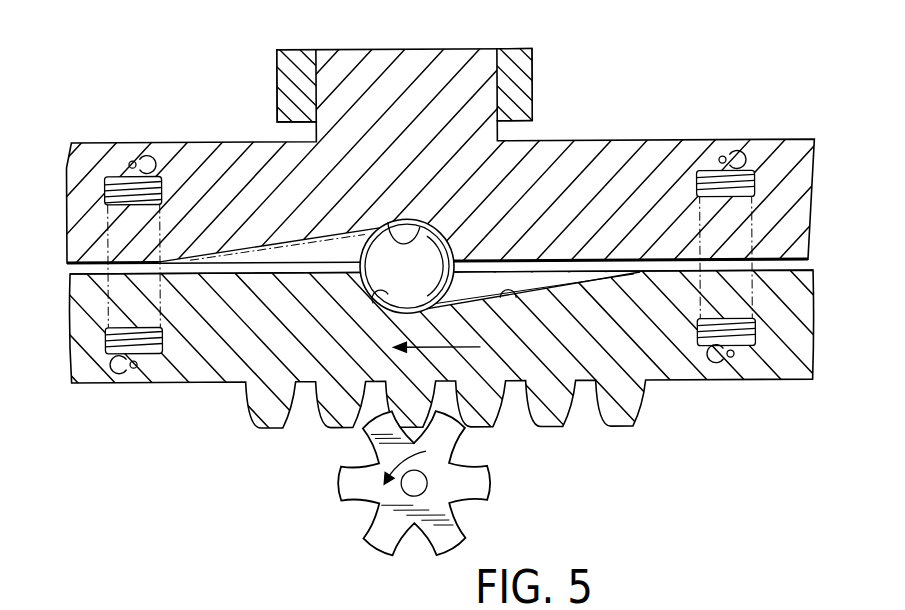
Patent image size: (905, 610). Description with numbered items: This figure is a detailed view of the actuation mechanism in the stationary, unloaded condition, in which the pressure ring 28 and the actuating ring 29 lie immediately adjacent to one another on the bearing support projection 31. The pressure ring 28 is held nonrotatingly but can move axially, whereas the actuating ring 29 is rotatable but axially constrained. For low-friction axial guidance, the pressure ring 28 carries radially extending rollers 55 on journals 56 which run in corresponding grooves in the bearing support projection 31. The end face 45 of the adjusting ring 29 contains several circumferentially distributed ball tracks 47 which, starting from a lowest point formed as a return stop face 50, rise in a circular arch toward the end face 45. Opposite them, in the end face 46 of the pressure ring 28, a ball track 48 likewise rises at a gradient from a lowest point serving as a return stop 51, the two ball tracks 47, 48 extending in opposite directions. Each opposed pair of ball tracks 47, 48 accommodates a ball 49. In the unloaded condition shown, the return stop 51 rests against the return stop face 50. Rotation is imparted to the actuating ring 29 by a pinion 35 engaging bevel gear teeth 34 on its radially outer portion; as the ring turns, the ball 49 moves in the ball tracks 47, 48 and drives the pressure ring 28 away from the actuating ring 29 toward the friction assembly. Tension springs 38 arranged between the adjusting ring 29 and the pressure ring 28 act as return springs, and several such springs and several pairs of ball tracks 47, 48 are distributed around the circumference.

The pressure ring 28 is at (452, 133).
The actuating ring 29 is at (452, 373).
The bearing support projection 31 is at (293, 59).
The bevel gear teeth 34 is at (623, 430).
The pinion 35 is at (478, 489).
The tension springs 38 is at (115, 193).
The end face of the adjusting ring 45 is at (192, 277).
The end face of the pressure ring 46 is at (532, 260).
The ball tracks 47 is at (516, 300).
The ball track 48 is at (260, 246).
The ball 49 is at (418, 259).
The return stop face 50 is at (382, 300).
The return stop 51 is at (393, 226).
The rollers 55 is at (440, 133).
The journals 56 is at (462, 64).